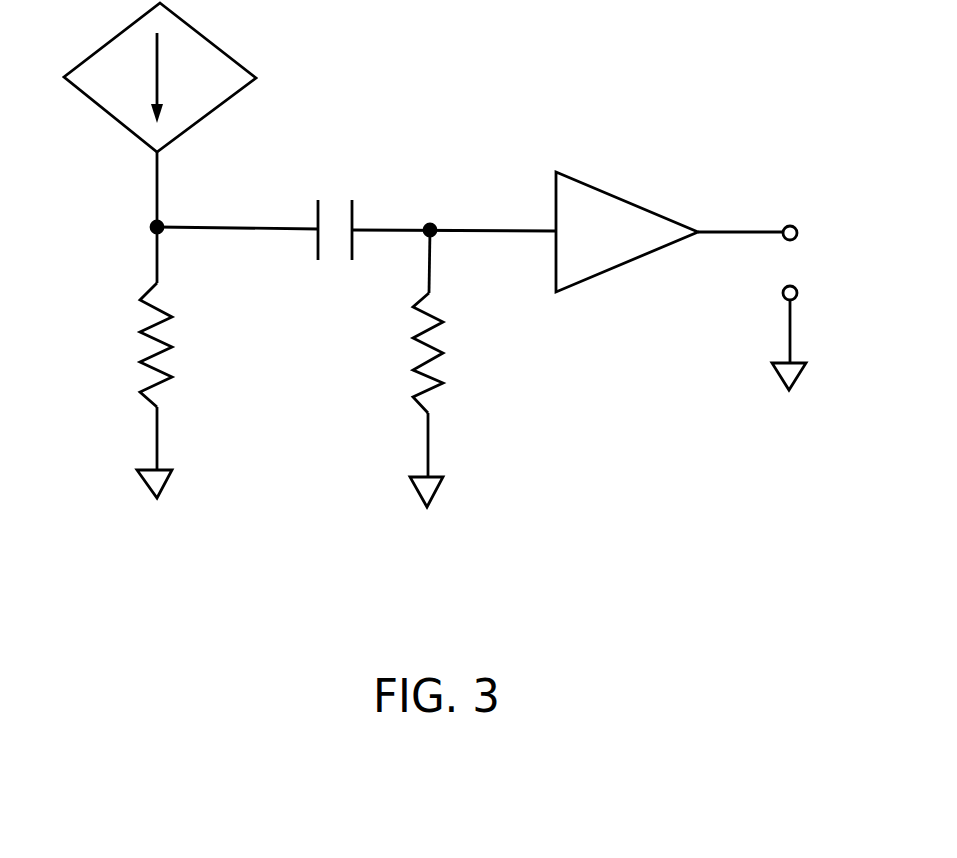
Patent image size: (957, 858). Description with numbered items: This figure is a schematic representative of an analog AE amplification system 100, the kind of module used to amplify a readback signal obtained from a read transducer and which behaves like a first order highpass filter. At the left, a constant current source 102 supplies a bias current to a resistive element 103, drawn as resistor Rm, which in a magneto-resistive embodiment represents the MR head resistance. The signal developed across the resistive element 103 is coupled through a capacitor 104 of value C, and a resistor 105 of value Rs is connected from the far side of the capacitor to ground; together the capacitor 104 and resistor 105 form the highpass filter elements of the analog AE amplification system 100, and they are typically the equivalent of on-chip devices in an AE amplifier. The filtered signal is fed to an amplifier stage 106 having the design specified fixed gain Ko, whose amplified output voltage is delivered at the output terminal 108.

The analog AE amplification system 100 is at (733, 60).
The constant current source 102 is at (220, 47).
The resistive element 103 is at (140, 358).
The capacitor 104 is at (357, 210).
The resistor 105 is at (418, 388).
The amplifier Ko 106 is at (605, 192).
The output terminal Vout 108 is at (787, 227).